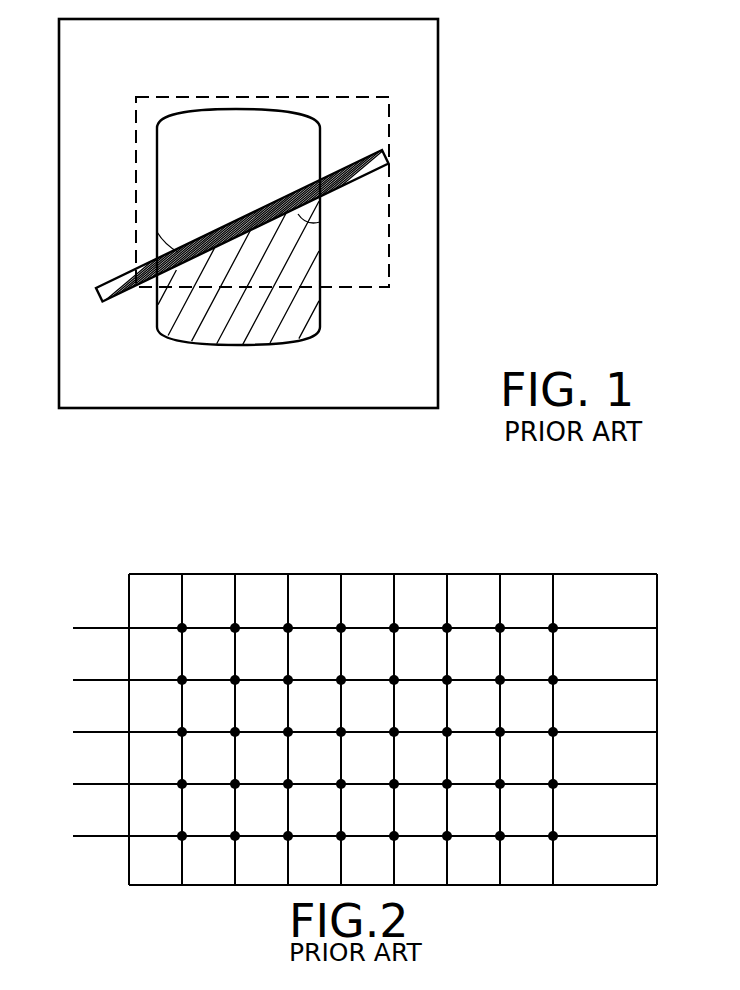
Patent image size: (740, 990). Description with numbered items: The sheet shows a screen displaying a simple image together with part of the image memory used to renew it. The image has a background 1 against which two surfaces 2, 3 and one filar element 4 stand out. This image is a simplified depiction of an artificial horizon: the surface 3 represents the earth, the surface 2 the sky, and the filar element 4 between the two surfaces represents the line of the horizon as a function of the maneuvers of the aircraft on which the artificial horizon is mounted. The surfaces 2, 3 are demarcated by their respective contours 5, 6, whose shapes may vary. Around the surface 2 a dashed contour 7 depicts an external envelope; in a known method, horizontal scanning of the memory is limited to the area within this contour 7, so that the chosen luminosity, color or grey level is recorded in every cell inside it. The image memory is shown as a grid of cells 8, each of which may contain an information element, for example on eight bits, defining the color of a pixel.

In FIG. 1, the background 1 is at (412, 67).
In FIG. 1, the surface 2 is at (292, 147).
In FIG. 1, the surface 3 is at (283, 295).
In FIG. 1, the filar element 4 is at (388, 158).
In FIG. 1, the contour 5 is at (300, 214).
In FIG. 1, the contour 6 is at (178, 252).
In FIG. 1, the contour 7 is at (200, 96).
In FIG. 2, the cell 8 is at (555, 626).